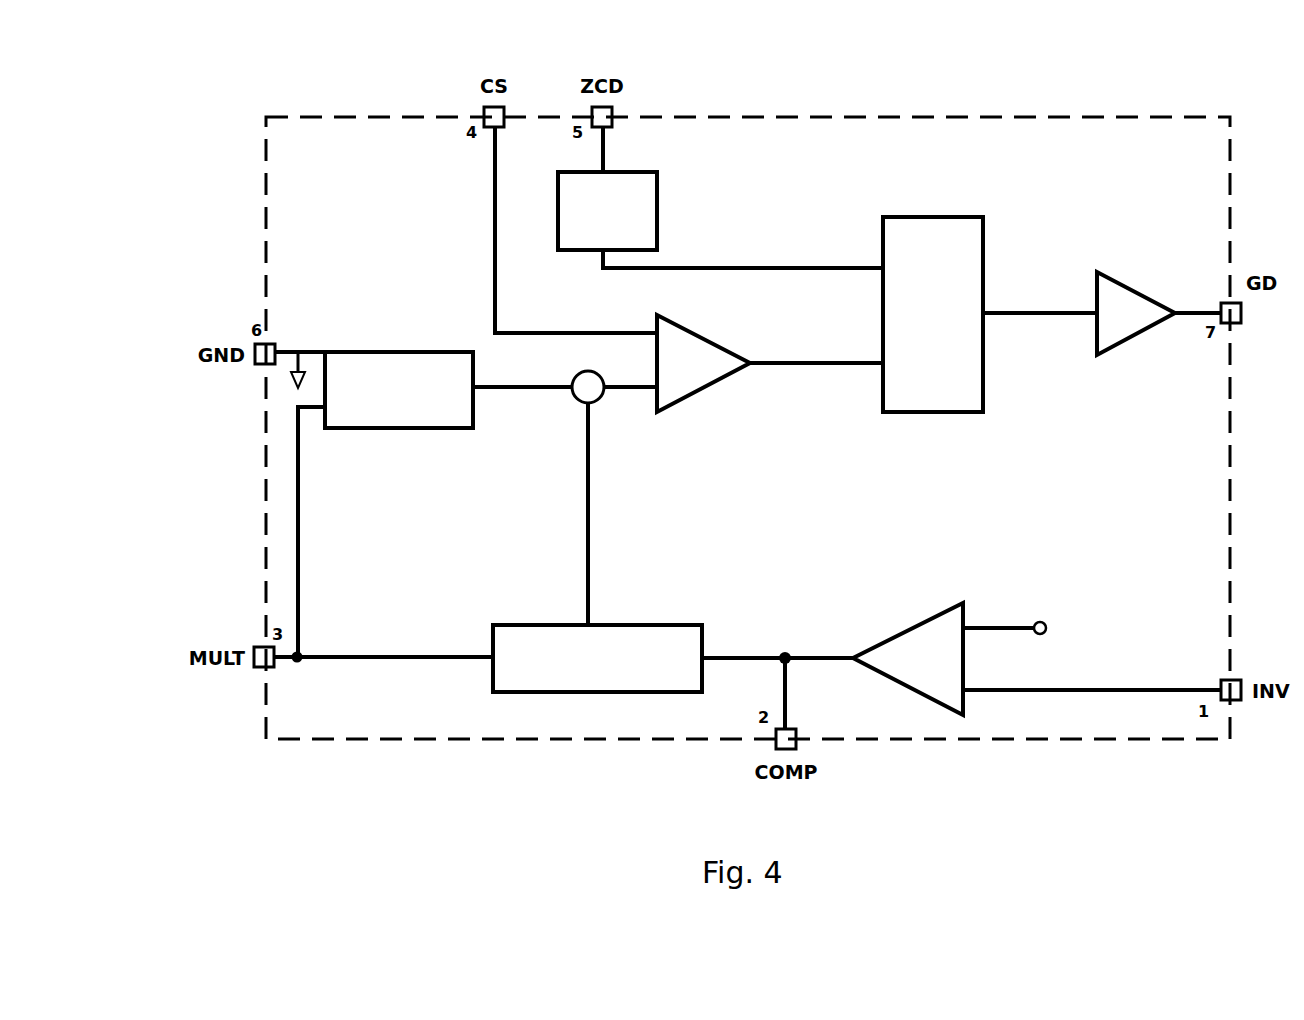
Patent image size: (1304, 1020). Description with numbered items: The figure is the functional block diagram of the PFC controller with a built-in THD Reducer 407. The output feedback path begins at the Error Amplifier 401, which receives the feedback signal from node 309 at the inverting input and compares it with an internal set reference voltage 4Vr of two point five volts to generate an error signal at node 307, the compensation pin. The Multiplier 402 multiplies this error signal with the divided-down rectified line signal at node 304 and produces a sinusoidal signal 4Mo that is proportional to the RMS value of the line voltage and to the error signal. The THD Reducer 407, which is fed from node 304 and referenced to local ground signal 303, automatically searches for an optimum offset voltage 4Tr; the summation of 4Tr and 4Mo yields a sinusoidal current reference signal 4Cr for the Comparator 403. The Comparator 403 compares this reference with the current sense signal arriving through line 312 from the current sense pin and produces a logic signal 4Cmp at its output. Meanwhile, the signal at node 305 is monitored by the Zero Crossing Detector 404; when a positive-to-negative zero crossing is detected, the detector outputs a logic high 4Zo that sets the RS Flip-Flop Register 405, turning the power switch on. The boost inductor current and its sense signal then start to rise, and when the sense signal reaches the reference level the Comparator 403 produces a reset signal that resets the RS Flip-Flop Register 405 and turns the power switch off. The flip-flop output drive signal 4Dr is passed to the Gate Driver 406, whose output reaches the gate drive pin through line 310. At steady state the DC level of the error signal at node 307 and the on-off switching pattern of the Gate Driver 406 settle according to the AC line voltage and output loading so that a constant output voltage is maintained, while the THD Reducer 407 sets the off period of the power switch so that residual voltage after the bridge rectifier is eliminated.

The current sense input line 312 is at (493, 207).
The node 305 is at (605, 140).
The Zero Crossing Detector 404 is at (657, 205).
The zero crossing detector output signal 4Zo is at (718, 268).
The RS Flip-Flop Register 405 is at (940, 412).
The drive signal 4Dr is at (1010, 313).
The Gate Driver 406 is at (1126, 290).
The gate drive output line 310 is at (1200, 322).
The Comparator 403 is at (715, 378).
The comparator output signal 4Cmp is at (793, 362).
The local ground signal 303 is at (303, 352).
The THD Reducer 407 is at (398, 352).
The node 304 is at (378, 657).
The offset voltage 4Tr is at (527, 390).
The comparator reference signal 4Cr is at (625, 388).
The sinusoidal signal 4Mo is at (592, 535).
The Multiplier 402 is at (562, 625).
The node 307 is at (750, 658).
The Error Amplifier 401 is at (890, 645).
The reference voltage 4Vr is at (1000, 628).
The node 309 is at (1068, 690).